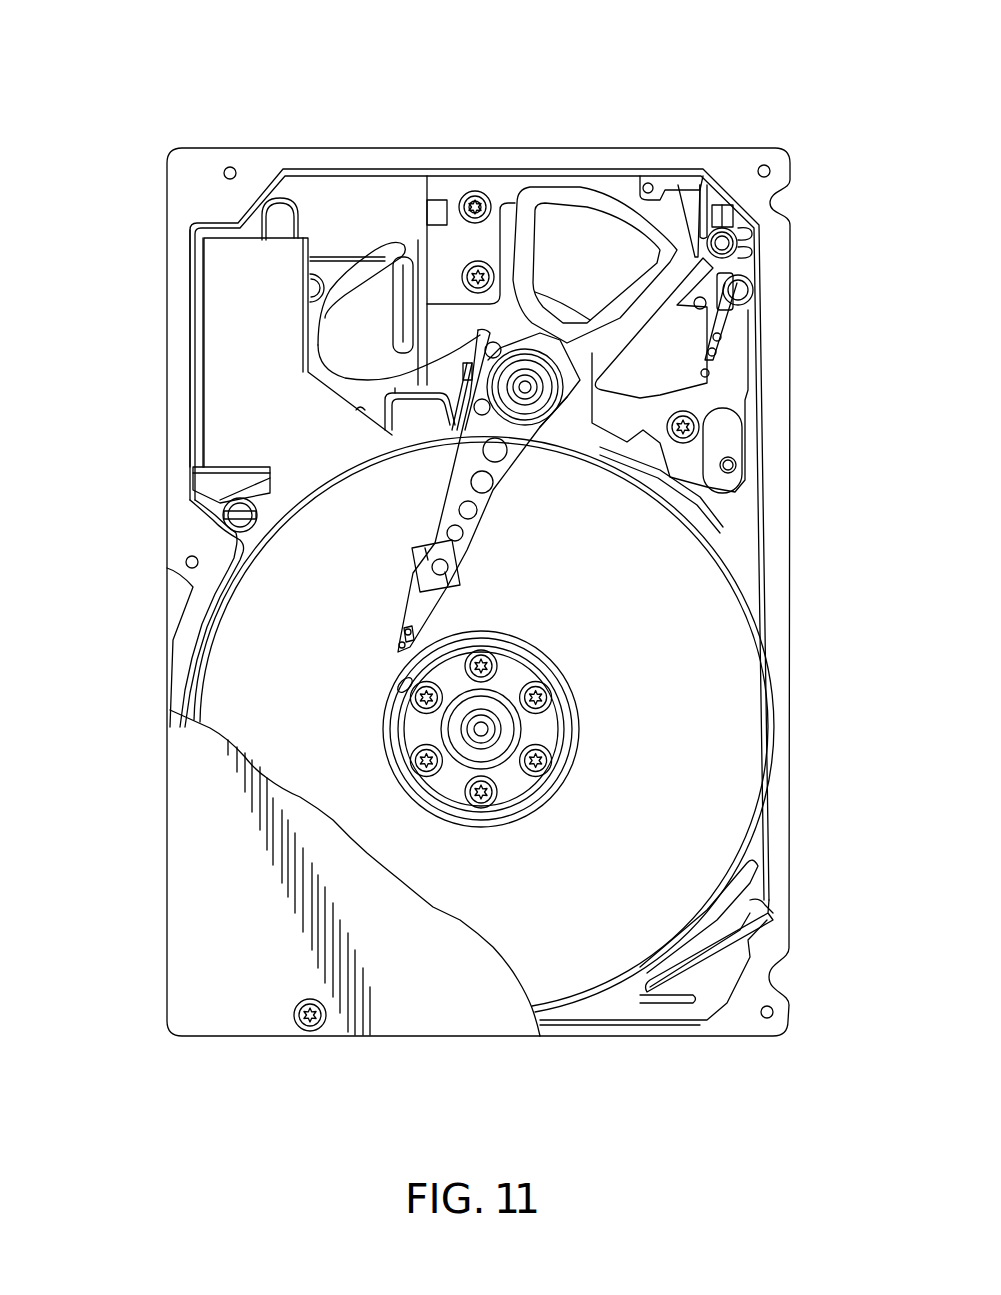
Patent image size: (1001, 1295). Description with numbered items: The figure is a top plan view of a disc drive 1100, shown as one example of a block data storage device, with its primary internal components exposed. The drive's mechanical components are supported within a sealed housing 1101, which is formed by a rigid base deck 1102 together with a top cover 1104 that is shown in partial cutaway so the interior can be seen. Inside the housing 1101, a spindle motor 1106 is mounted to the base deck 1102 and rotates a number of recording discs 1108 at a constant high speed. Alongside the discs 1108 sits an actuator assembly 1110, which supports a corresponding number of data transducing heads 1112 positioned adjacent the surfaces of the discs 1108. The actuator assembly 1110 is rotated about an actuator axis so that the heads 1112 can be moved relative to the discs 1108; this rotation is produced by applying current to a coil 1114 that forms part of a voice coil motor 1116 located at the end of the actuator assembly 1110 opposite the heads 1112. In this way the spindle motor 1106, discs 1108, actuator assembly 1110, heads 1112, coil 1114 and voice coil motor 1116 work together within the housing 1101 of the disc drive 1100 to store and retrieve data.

The disc drive 1100 is at (257, 122).
The housing 1101 is at (150, 232).
The base deck 1102 is at (320, 370).
The cover / ramp 1104 is at (200, 813).
The spindle motor 1106 is at (495, 710).
The recording discs 1108 is at (698, 785).
The actuator assembly 1110 is at (533, 420).
The data transducing heads 1112 is at (393, 647).
The coil 1114 is at (580, 190).
The voice coil motor 1116 is at (623, 195).